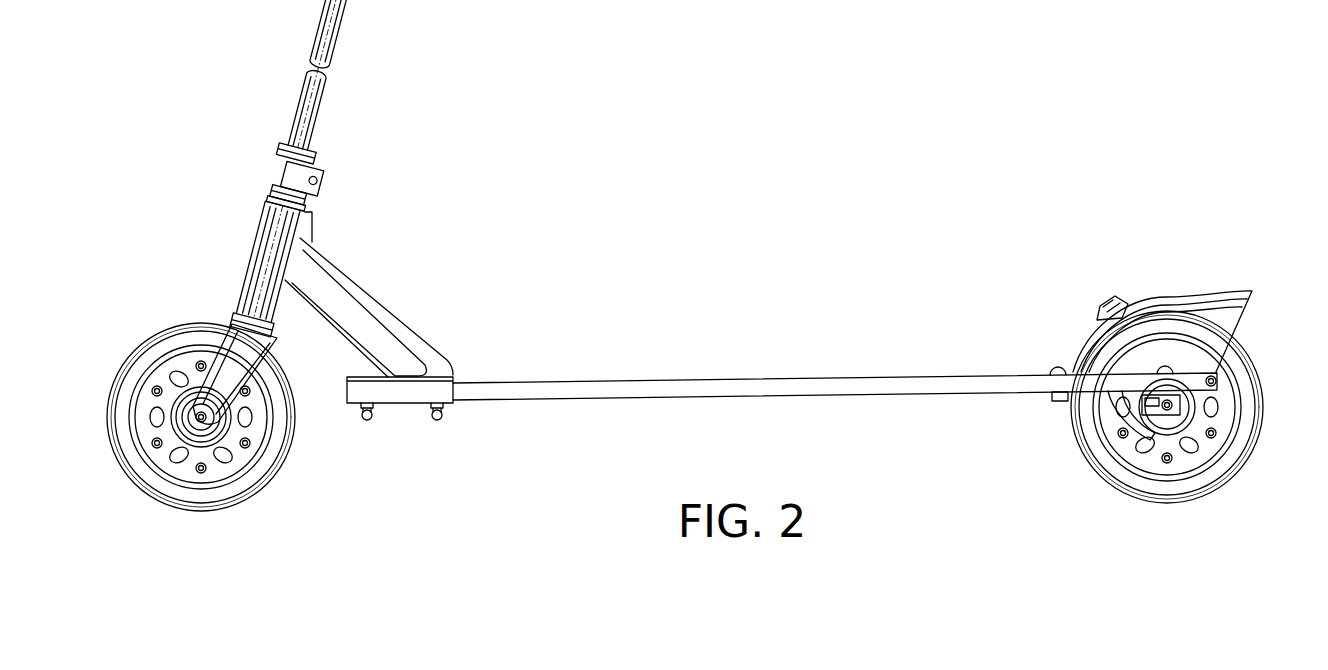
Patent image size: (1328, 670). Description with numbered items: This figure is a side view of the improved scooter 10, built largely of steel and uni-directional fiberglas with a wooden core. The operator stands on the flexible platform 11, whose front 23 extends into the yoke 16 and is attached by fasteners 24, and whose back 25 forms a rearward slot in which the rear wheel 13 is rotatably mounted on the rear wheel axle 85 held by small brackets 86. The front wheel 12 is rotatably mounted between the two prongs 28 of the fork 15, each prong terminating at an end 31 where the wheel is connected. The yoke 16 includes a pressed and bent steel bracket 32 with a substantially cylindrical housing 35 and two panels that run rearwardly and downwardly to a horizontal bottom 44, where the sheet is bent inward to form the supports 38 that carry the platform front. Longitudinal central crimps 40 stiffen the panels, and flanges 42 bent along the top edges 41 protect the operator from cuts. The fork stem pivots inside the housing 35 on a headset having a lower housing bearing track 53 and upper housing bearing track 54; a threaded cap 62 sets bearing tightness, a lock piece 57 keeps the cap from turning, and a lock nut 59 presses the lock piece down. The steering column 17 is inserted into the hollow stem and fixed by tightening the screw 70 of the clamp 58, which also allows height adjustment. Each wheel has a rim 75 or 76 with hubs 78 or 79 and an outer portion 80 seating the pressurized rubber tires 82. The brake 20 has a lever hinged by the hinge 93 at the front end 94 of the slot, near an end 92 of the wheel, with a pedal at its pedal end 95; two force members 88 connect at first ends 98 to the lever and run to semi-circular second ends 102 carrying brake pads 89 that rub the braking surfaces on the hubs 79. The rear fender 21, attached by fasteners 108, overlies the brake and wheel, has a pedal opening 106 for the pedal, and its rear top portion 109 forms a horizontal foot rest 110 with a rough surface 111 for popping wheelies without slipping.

The scooter 10 is at (536, 368).
The platform 11 is at (614, 398).
The front wheel 12 is at (192, 431).
The rear wheel 13 is at (1146, 447).
The fork 15 is at (214, 345).
The yoke 16 is at (396, 320).
The steering column 17 is at (306, 97).
The brake 20 is at (1088, 447).
The rear fender 21 is at (1179, 285).
The front 23 is at (483, 402).
The fasteners 24 is at (368, 420).
The back 25 is at (980, 377).
The prongs 28 is at (200, 380).
The end 31 is at (222, 432).
The bracket 32 is at (350, 262).
The cylindrical housing 35 is at (255, 250).
The supports 38 is at (400, 405).
The longitudinal central crimps 40 is at (425, 353).
The top edges 41 is at (372, 287).
The flanges 42 is at (422, 340).
The horizontal bottom 44 is at (357, 408).
The lower housing bearing track 53 is at (280, 325).
The upper housing bearing track 54 is at (270, 197).
The lock piece 57 is at (310, 196).
The clamp 58 is at (356, 152).
The lock nut 59 is at (283, 160).
The cap 62 is at (305, 205).
The screw 70 is at (318, 180).
The rim 75 is at (170, 473).
The rim 76 is at (1183, 482).
The hubs 78 is at (180, 422).
The hubs 79 is at (1153, 485).
The outer portion 80 is at (1197, 467).
The pressurized rubber tires 82 is at (178, 510).
The rear wheel axle 85 is at (1183, 395).
The small brackets 86 is at (1237, 418).
The force members 88 is at (1097, 470).
The brake pads 89 is at (1130, 388).
The end 92 is at (1066, 400).
The hinge 93 is at (1058, 396).
The front end 94 is at (1065, 402).
The pedal end 95 is at (1068, 272).
The first ends 98 is at (1080, 432).
The second ends 102 is at (1127, 485).
The pedal opening 106 is at (1103, 321).
The fasteners 108 is at (1056, 365).
The rear top portion 109 is at (1183, 298).
The foot rest 110 is at (1207, 299).
The rough surface 111 is at (1221, 299).